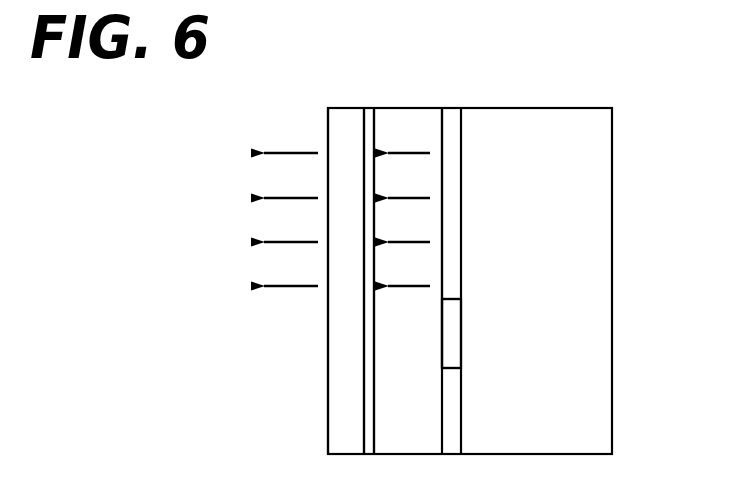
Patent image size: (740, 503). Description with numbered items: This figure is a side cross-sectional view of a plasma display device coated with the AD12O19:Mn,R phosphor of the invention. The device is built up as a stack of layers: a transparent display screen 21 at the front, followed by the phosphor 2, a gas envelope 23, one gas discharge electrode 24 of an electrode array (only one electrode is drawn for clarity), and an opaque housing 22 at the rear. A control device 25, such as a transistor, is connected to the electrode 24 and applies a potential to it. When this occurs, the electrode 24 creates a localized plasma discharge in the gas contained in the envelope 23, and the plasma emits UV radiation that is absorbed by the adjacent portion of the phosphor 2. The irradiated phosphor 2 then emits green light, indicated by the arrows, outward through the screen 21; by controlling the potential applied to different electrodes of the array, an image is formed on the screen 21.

The phosphor 2 is at (368, 112).
The transparent display screen 21 is at (327, 127).
The opaque housing 22 is at (533, 110).
The gas envelope 23 is at (408, 133).
The gas discharge electrode 24 is at (450, 117).
The control device 25 is at (458, 330).